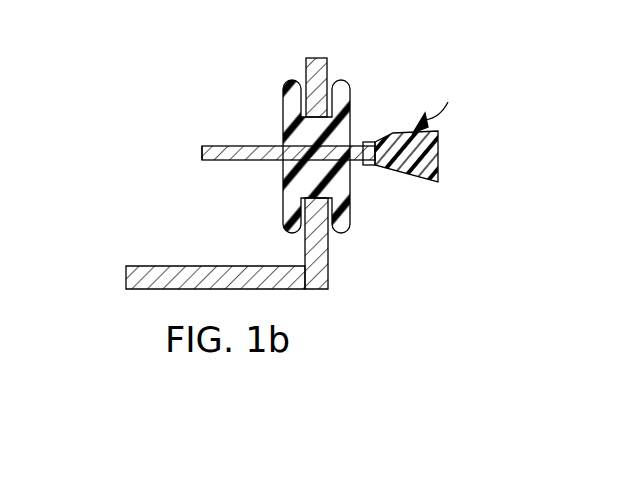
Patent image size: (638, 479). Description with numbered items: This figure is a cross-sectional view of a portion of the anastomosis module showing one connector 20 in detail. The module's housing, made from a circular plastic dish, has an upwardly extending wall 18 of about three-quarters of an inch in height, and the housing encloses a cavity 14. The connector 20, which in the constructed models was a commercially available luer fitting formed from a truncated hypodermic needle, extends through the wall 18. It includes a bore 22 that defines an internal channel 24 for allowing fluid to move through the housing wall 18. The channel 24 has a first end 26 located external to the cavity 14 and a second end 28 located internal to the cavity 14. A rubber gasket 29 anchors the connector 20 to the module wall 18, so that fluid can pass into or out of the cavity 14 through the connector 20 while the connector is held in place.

The cavity 14 is at (100, 189).
The upwardly extending wall 18 is at (315, 60).
The connector 20 is at (442, 106).
The bore 22 is at (356, 143).
The internal channel 24 is at (268, 145).
The first end 26 is at (440, 142).
The second end 28 is at (205, 151).
The rubber gasket 29 is at (348, 210).